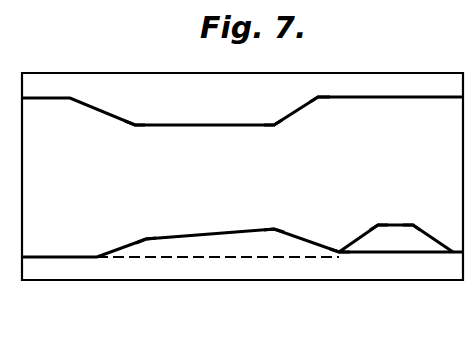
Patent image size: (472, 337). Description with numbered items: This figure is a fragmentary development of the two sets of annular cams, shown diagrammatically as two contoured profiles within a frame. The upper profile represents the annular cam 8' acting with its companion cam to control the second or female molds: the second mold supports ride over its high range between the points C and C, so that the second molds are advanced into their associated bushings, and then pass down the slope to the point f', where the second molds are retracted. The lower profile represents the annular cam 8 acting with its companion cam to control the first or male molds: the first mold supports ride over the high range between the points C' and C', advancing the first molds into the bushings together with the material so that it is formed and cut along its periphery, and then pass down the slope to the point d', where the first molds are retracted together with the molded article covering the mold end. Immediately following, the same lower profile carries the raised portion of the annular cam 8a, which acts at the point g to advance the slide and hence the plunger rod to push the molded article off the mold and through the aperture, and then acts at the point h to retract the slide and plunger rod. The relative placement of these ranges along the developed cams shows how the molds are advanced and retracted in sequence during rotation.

The annular cam 8' is at (242, 142).
The annular cam 8 is at (242, 277).
The annular cam 8a is at (393, 227).
The high range points C is at (203, 133).
The high range points C' is at (210, 224).
The retraction point f' is at (320, 108).
The retraction point d' is at (339, 241).
The advancing point g is at (378, 216).
The retracting point h is at (414, 218).